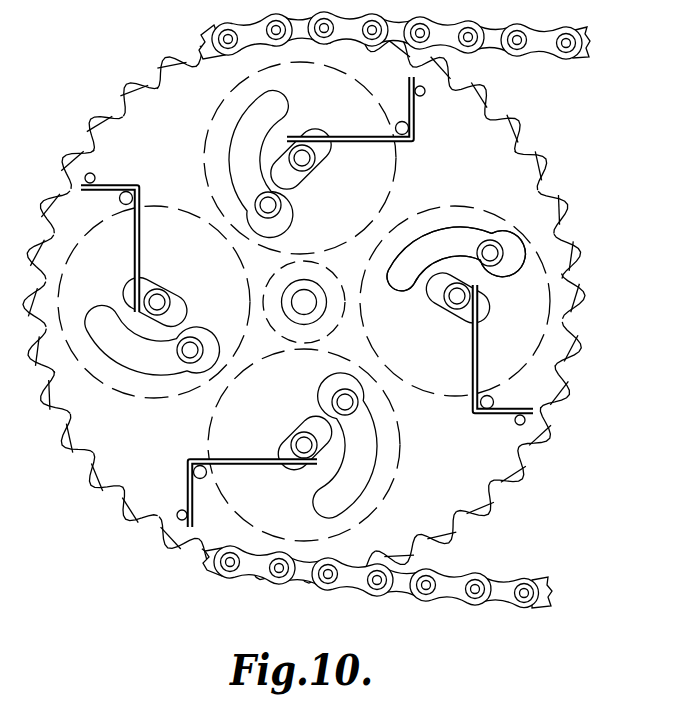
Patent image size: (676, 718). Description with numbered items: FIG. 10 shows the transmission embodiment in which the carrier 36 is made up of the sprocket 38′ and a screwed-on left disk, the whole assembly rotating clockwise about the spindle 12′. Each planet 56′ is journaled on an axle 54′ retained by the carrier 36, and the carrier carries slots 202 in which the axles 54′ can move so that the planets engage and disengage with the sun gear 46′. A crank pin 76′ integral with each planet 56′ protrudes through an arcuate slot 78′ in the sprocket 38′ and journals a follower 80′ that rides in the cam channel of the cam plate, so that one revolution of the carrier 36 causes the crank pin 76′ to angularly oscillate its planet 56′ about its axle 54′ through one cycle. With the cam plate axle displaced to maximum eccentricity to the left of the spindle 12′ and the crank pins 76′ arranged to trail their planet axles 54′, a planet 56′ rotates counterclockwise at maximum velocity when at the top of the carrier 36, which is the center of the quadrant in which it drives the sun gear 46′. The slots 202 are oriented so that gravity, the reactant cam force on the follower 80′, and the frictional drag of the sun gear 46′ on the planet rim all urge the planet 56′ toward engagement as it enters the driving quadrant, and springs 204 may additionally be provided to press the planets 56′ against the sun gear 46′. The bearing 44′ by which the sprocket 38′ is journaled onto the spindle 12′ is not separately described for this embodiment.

The carrier assembly 36 is at (335, 302).
The sprocket 38′ is at (538, 152).
The spindle 12′ is at (296, 294).
The hub 44′ is at (288, 317).
The sun gear 46′ is at (337, 319).
The planet 56′ is at (442, 204).
The crank pin 76′ is at (489, 237).
The arcuate slot 78′ is at (512, 257).
The follower 80′ is at (497, 243).
The axle 54′ is at (453, 314).
The slots 202 is at (492, 311).
The springs 204 is at (415, 115).